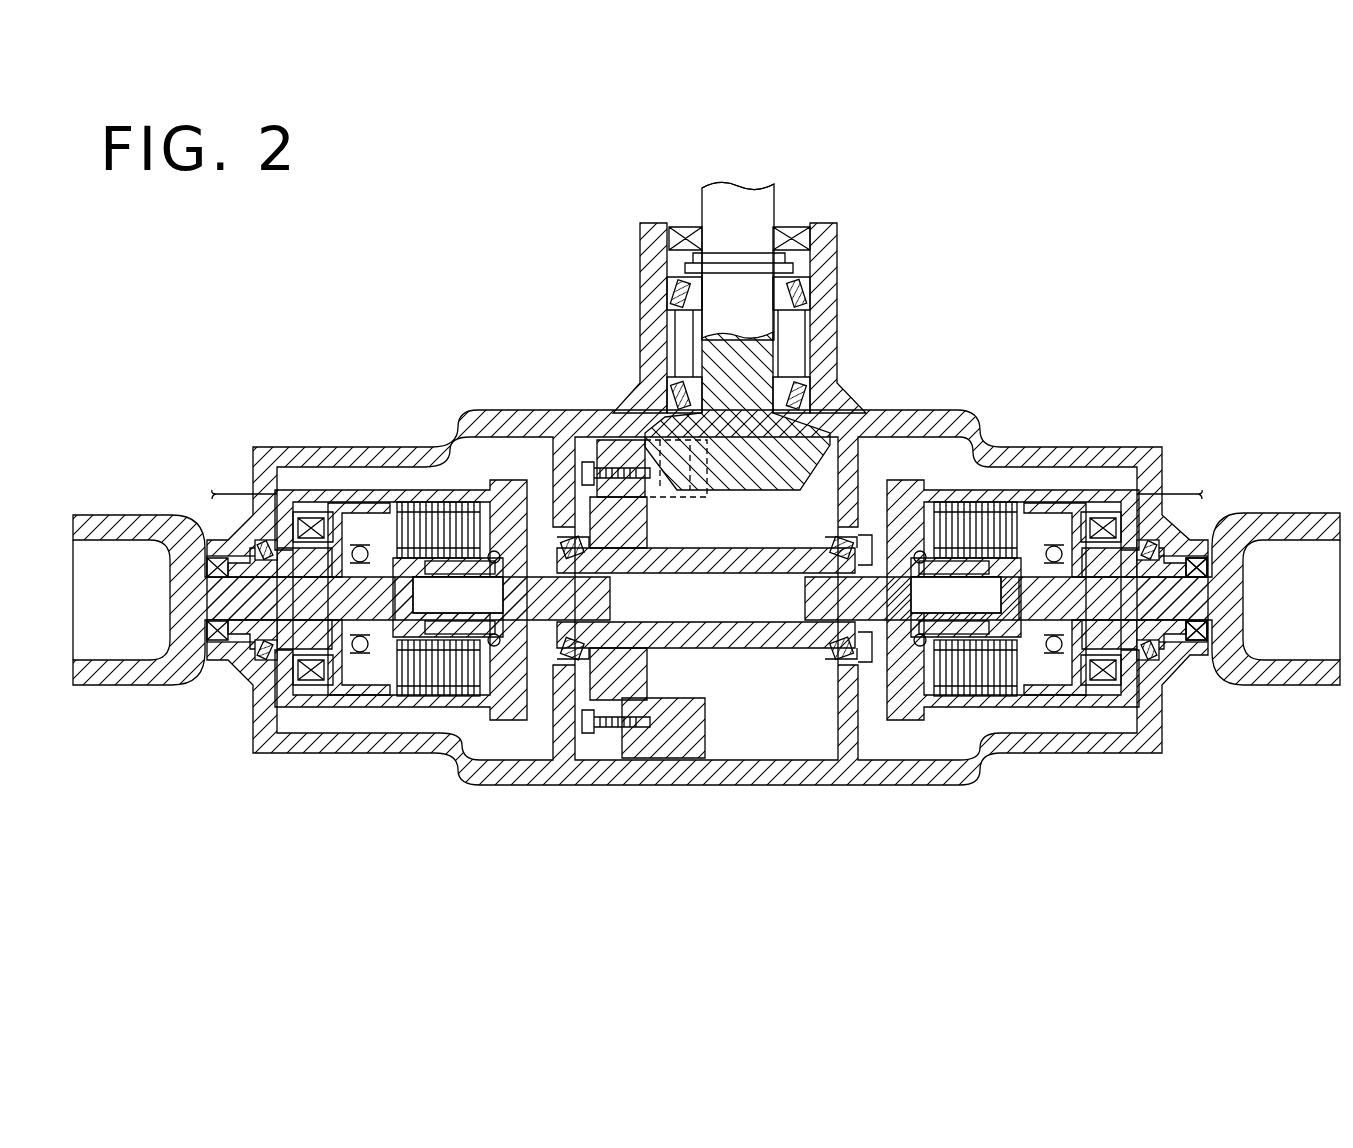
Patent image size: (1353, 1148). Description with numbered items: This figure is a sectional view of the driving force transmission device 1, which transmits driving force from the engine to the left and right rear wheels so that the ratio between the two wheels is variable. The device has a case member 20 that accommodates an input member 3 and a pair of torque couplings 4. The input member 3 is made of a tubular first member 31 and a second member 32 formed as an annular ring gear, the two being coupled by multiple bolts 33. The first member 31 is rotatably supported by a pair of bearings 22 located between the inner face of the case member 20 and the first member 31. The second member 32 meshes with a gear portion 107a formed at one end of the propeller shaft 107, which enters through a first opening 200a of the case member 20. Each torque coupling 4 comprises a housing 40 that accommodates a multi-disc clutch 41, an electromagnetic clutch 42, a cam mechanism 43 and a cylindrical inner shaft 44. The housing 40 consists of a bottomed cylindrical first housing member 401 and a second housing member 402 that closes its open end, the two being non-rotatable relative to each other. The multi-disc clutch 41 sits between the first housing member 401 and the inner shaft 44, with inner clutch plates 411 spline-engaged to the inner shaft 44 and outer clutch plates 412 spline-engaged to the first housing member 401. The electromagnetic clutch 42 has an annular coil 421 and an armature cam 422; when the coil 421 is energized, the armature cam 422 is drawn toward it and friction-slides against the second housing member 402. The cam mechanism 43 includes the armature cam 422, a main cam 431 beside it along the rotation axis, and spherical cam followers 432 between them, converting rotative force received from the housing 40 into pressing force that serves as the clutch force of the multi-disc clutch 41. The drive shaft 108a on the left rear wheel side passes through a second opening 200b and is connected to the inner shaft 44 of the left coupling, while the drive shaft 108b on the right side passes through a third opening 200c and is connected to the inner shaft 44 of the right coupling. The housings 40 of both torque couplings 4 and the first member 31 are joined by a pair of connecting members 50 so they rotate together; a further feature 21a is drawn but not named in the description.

The driving force transmission device 1 is at (453, 248).
The input member 3 is at (715, 678).
The torque coupling 4 is at (668, 548).
The case member 20 is at (832, 300).
The hub flange 21a is at (858, 548).
The bearings 22 is at (578, 548).
The first member 31 is at (635, 700).
The second member 32 is at (672, 728).
The bolts 33 is at (585, 735).
The housing 40 is at (463, 478).
The multi-disc clutch 41 is at (415, 480).
The inner clutch plates 411 is at (428, 497).
The outer clutch plates 412 is at (405, 497).
The electromagnetic clutch 42 is at (231, 541).
The coil 421 is at (293, 530).
The armature cam 422 is at (293, 495).
The cam mechanism 43 is at (387, 692).
The main cam 431 is at (432, 700).
The spherical cam followers 432 is at (326, 705).
The inner shaft 44 is at (350, 547).
The connecting members 50 is at (510, 737).
The propeller shaft 107 is at (767, 207).
The gear portion 107a is at (743, 477).
The drive shaft 108a is at (220, 607).
The drive shaft 108b is at (1158, 610).
The first opening 200a is at (771, 312).
The second opening 200b is at (206, 672).
The third opening 200c is at (1213, 528).
The first housing member 401 is at (290, 725).
The second housing member 402 is at (285, 672).